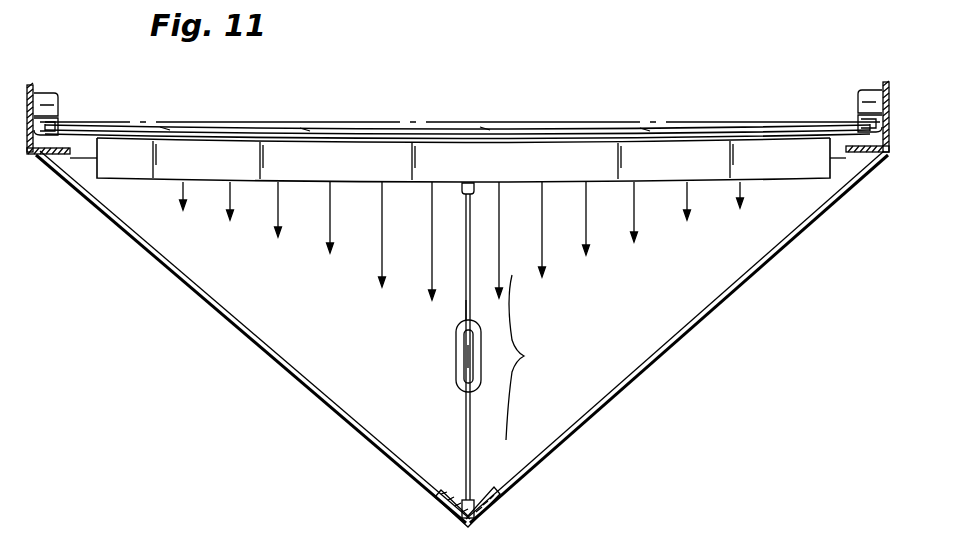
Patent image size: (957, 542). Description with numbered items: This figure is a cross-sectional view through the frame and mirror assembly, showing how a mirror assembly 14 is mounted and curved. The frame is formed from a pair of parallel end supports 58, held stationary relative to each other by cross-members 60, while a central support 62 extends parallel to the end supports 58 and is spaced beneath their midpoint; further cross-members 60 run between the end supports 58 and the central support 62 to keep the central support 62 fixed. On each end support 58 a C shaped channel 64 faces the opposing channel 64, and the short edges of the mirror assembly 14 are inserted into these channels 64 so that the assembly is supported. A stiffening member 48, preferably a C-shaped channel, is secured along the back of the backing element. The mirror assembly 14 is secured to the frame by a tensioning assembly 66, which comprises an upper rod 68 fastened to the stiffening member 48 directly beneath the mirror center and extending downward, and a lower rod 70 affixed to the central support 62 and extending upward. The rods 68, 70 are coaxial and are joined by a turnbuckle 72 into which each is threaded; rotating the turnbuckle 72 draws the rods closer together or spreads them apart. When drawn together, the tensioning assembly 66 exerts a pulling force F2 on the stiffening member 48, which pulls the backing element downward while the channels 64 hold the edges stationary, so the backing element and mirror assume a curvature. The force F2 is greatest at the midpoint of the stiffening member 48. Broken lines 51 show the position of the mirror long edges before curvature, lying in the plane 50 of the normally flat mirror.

The mirror assembly 14 is at (140, 127).
The stiffening member 48 is at (718, 184).
The plane 50 is at (606, 121).
The broken lines 51 is at (508, 120).
The end support 58 is at (30, 155).
The cross-member 60 is at (238, 328).
The central support 62 is at (486, 505).
The C shaped channel 64 is at (50, 104).
The tensioning assembly 66 is at (537, 357).
The upper rod 68 is at (465, 312).
The lower rod 70 is at (466, 438).
The turnbuckle 72 is at (457, 372).
The pulling force F2 is at (380, 258).